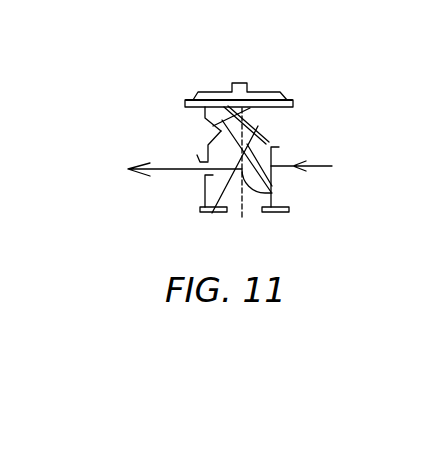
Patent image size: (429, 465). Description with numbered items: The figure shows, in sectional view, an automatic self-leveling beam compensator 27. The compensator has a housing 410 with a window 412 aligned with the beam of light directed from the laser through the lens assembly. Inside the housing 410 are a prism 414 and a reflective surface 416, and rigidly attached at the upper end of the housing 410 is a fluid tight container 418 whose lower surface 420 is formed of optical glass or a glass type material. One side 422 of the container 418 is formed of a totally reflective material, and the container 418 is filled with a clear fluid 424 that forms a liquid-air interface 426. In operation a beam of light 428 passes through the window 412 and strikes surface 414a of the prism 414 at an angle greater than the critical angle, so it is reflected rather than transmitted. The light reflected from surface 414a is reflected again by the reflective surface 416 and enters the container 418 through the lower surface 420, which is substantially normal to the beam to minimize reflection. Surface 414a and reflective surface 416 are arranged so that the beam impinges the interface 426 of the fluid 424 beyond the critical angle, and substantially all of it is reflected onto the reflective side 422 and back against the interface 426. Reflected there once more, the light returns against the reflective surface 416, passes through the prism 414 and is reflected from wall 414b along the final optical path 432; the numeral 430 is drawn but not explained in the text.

The compensator 27 is at (271, 58).
The housing 410 is at (289, 210).
The window 412 is at (273, 162).
The prism 414 is at (239, 221).
The surface of prism 414a is at (205, 178).
The wall of prism 414b is at (248, 211).
The reflective surface 416 is at (263, 143).
The fluid tight container 418 is at (182, 121).
The lower surface 420 is at (260, 122).
The side of container 422 is at (210, 124).
The clear fluid 424 is at (213, 114).
The liquid-air interface 426 is at (260, 92).
The beam of light 428 is at (320, 168).
The stop 430 is at (197, 155).
The final optical path 432 is at (150, 170).